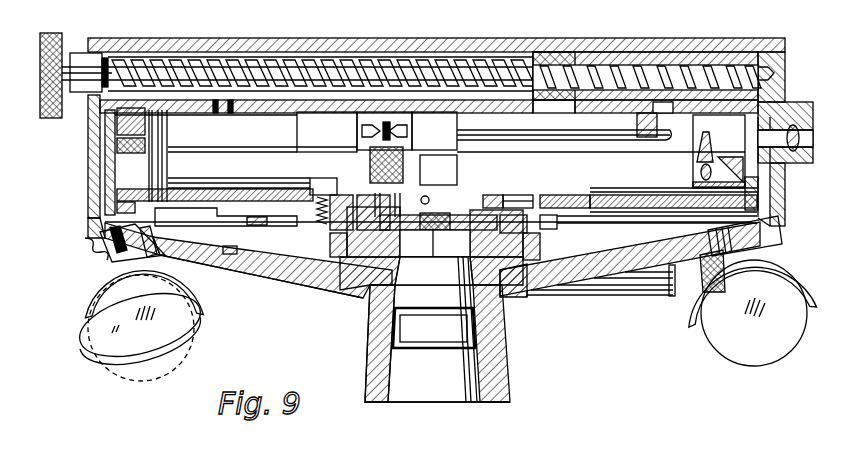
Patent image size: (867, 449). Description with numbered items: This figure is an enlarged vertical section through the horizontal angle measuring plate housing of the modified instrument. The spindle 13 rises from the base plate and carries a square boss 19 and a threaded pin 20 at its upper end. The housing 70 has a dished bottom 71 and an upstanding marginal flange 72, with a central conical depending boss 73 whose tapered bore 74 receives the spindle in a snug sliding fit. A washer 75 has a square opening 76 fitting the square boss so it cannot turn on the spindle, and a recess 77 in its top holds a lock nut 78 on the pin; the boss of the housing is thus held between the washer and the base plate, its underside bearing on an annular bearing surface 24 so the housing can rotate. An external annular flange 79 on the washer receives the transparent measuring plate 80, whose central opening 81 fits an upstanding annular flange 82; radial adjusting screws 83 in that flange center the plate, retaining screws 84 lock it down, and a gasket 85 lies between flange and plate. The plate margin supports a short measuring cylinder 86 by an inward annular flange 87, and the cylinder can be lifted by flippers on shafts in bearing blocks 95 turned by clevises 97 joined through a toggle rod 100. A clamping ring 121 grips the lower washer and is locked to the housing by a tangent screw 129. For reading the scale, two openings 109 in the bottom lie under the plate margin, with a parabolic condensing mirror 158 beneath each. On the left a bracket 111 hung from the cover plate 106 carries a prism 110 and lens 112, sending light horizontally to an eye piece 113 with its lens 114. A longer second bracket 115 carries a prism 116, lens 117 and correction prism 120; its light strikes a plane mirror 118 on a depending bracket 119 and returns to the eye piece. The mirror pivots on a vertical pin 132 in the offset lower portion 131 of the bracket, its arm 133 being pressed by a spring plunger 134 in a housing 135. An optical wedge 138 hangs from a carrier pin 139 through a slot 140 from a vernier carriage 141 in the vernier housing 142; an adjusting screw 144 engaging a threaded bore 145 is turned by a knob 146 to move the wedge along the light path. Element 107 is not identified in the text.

The spindle 13 is at (498, 356).
The square boss 19 is at (436, 258).
The screw-threaded pin 20 is at (436, 232).
The annular bearing surface 24 is at (366, 297).
The housing 70 is at (289, 280).
The dished bottom 71 is at (608, 284).
The upstanding marginal flange 72 is at (90, 173).
The depending boss 73 is at (370, 362).
The tapered bore 74 is at (486, 396).
The washer 75 is at (541, 240).
The central square opening 76 is at (461, 260).
The central recess 77 is at (577, 216).
The lock nut 78 is at (486, 218).
The external annular flange 79 is at (634, 220).
The transparent measuring plate 80 is at (612, 176).
The circular opening 81 is at (524, 192).
The upstanding annular flange 82 is at (346, 190).
The adjusting screws 83 is at (489, 192).
The retaining screws 84 is at (300, 174).
The washer or gasket 85 is at (572, 192).
The measuring cylinder 86 is at (102, 197).
The inwardly directed annular flange 87 is at (163, 178).
The bearing blocks 95 is at (288, 234).
The clevises 97 is at (220, 210).
The toggle rod 100 is at (230, 252).
The cover plate 106 is at (147, 110).
The shaft collar 107 is at (97, 114).
The openings 109 is at (84, 262).
The reflecting prism or mirror 110 is at (116, 128).
The bracket 111 is at (167, 138).
The lens 112 is at (112, 154).
The eye piece 113 is at (790, 126).
The lens 114 is at (792, 166).
The second bracket 115 is at (672, 144).
The reflecting prism or mirror 116 is at (733, 150).
The lens 117 is at (702, 168).
The plane mirror 118 is at (416, 138).
The depending bracket 119 is at (438, 110).
The positive correction prism 120 is at (712, 130).
The clamping ring 121 is at (523, 284).
The tangent screw 129 is at (669, 288).
The lower portion of bracket 131 is at (303, 295).
The vertical pin 132 is at (407, 155).
The laterally extending arm 133 is at (288, 38).
The spring-pressed plunger 134 is at (342, 161).
The plunger housing 135 is at (290, 140).
The optical wedge or prism 138 is at (582, 101).
The carrier pin 139 is at (648, 56).
The elongate slot 140 is at (330, 92).
The vernier carriage 141 is at (564, 38).
The vernier housing 142 is at (425, 94).
The adjusting screw 144 is at (197, 60).
The screw-threaded bore 145 is at (662, 48).
The operating knob 146 is at (72, 18).
The parabolic condensing mirror 158 is at (172, 338).